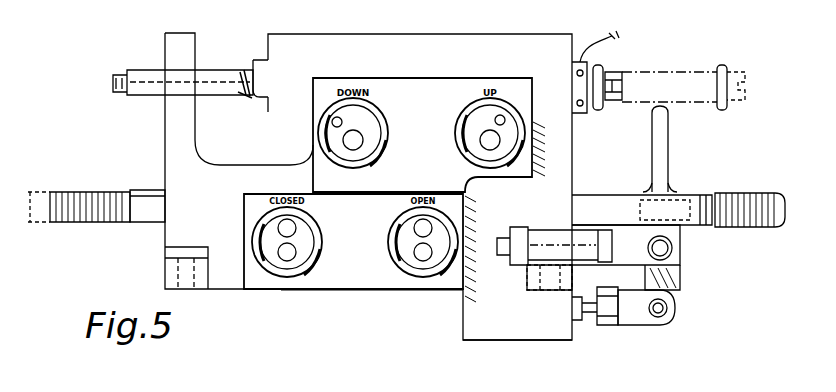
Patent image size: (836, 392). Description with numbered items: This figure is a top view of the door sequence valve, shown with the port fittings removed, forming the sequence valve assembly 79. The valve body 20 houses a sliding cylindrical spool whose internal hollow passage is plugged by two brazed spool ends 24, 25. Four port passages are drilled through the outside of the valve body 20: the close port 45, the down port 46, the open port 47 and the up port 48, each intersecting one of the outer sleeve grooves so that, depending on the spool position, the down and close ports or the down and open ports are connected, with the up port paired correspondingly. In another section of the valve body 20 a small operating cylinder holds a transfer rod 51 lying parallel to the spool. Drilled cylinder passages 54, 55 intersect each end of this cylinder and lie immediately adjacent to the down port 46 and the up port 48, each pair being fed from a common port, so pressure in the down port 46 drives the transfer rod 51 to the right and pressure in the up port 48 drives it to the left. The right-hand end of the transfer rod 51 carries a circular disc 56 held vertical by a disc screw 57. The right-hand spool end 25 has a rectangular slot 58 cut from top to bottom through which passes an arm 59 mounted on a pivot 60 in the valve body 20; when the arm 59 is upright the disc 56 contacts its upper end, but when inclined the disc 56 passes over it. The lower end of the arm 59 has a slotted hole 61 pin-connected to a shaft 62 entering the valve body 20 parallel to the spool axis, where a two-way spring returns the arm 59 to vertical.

The valve body 20 is at (172, 160).
The spool end 24 is at (146, 215).
The right-hand spool end 25 is at (757, 228).
The close port 45 is at (303, 250).
The down port 46 is at (362, 136).
The open port 47 is at (410, 256).
The up port 48 is at (478, 120).
The transfer rod 51 is at (208, 82).
The cylinder passage 54 is at (334, 121).
The cylinder passage 55 is at (505, 118).
The circular disc 56 is at (605, 78).
The disc screw 57 is at (625, 72).
The rectangular slot 58 is at (712, 192).
The arm 59 is at (660, 117).
The pivot 60 is at (667, 250).
The slotted hole 61 is at (680, 318).
The shaft 62 is at (586, 310).
The sequence valve assembly 79 is at (467, 346).